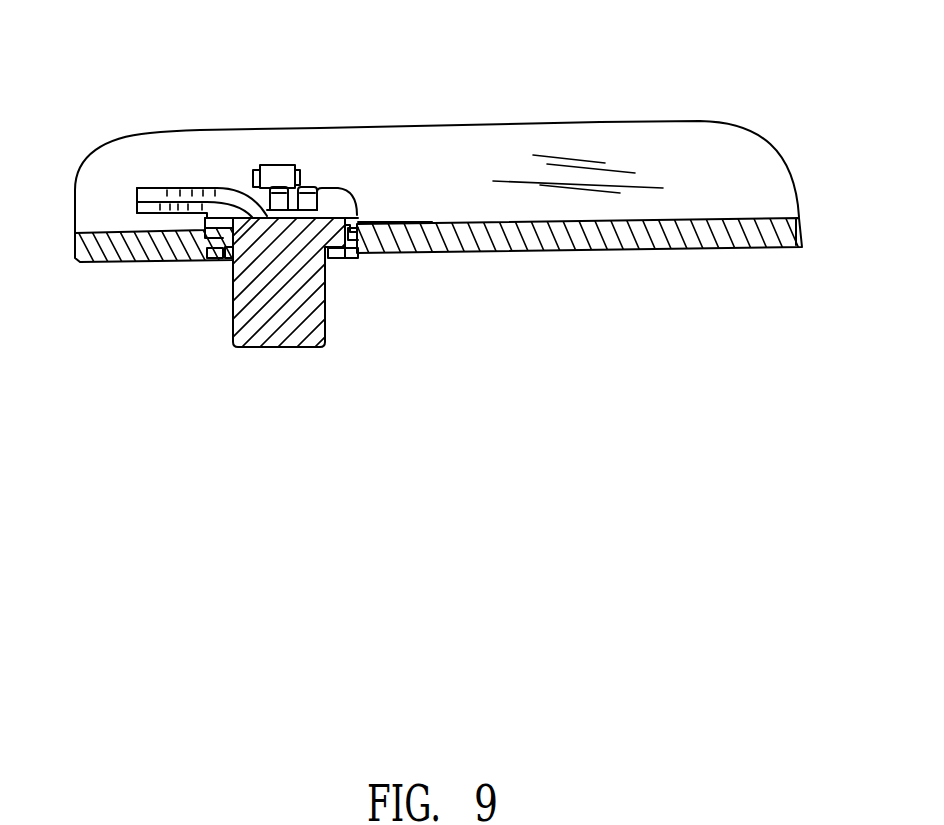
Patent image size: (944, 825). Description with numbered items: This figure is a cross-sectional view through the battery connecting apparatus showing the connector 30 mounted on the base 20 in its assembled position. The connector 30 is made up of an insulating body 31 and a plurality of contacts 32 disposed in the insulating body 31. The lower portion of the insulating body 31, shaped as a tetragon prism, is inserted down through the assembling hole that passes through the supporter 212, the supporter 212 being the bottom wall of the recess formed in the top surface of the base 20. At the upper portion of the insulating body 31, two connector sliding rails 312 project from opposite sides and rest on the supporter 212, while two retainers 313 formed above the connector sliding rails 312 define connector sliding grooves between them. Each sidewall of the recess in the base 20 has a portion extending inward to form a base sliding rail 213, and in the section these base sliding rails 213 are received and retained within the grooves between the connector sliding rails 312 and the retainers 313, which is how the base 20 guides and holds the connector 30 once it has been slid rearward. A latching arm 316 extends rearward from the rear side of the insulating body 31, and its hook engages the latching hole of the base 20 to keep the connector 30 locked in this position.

The base 20 is at (732, 190).
The connector 30 is at (335, 208).
The insulating body 31 is at (280, 307).
The contacts 32 is at (155, 192).
The latching arm 316 is at (278, 170).
The connector sliding rails 312 is at (213, 238).
The retainers 313 is at (210, 228).
The supporter 212 is at (224, 262).
The base sliding rail 213 is at (205, 234).